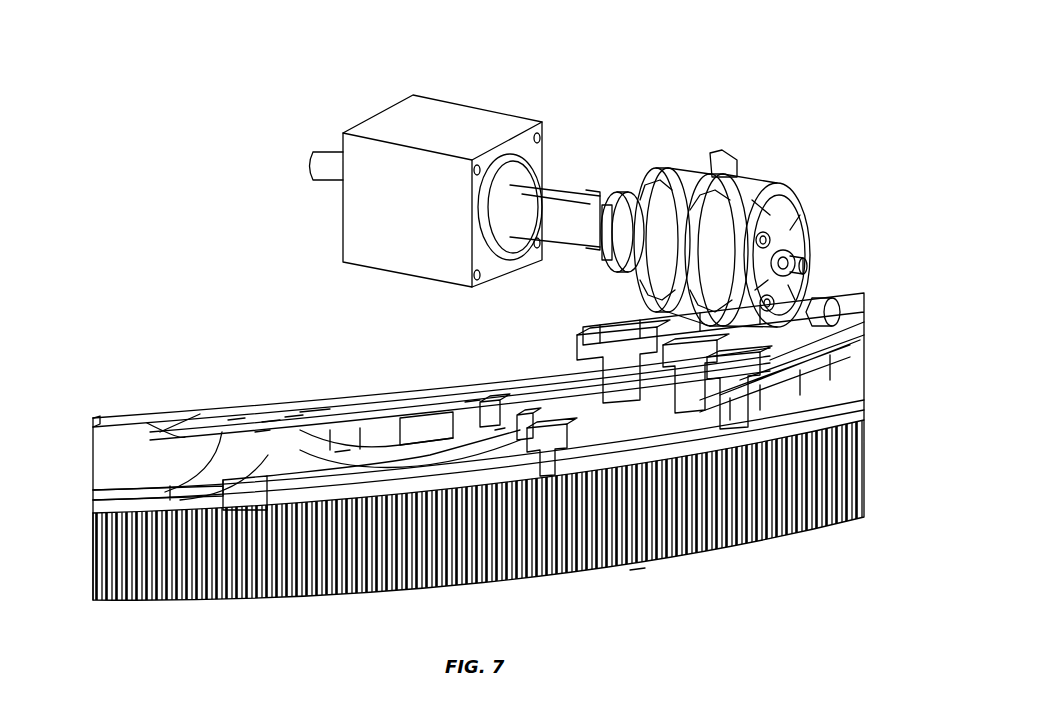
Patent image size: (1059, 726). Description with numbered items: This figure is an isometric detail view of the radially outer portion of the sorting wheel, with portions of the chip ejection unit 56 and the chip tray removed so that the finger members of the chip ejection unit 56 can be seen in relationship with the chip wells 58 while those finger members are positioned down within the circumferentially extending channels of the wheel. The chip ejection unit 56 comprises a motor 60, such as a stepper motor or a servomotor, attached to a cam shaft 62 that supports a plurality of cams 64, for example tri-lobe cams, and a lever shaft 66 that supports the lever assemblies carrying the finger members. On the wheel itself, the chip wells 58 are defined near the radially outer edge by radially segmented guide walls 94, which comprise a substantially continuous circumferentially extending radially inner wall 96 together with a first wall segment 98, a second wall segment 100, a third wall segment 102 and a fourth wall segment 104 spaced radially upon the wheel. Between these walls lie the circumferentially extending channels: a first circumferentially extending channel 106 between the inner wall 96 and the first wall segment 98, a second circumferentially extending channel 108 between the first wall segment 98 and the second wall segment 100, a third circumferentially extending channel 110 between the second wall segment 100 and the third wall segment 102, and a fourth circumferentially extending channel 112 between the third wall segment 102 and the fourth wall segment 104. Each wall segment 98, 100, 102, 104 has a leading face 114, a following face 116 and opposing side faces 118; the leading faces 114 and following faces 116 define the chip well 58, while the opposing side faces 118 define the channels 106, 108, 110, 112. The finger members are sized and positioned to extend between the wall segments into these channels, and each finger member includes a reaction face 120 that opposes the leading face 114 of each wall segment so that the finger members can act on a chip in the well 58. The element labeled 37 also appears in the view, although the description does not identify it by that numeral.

The block 37 is at (148, 462).
The chip ejection unit 56 is at (733, 221).
The chip well 58 is at (397, 453).
The motor 60 is at (368, 207).
The cam shaft 62 is at (804, 268).
The cams 64 is at (758, 174).
The lever shaft 66 is at (836, 304).
The radially segmented guide walls 94 is at (317, 388).
The substantially continuous circumferentially extending radially inner wall 96 is at (373, 400).
The first wall segment 98 is at (262, 430).
The second wall segment 100 is at (293, 415).
The third wall segment 102 is at (270, 420).
The fourth wall segment 104 is at (235, 418).
The first circumferentially extending channel 106 is at (472, 398).
The second circumferentially extending channel 108 is at (498, 426).
The third circumferentially extending channel 110 is at (520, 445).
The fourth circumferentially extending channel 112 is at (637, 570).
The leading face 114 is at (345, 455).
The following face 116 is at (197, 412).
The opposing side faces 118 is at (557, 440).
The reaction face 120 is at (663, 413).